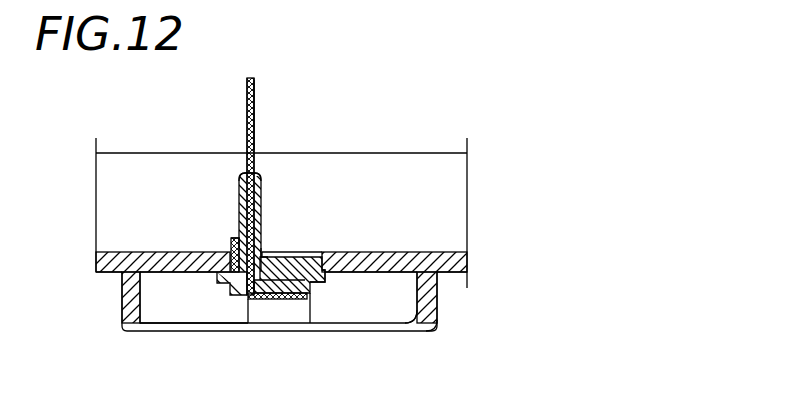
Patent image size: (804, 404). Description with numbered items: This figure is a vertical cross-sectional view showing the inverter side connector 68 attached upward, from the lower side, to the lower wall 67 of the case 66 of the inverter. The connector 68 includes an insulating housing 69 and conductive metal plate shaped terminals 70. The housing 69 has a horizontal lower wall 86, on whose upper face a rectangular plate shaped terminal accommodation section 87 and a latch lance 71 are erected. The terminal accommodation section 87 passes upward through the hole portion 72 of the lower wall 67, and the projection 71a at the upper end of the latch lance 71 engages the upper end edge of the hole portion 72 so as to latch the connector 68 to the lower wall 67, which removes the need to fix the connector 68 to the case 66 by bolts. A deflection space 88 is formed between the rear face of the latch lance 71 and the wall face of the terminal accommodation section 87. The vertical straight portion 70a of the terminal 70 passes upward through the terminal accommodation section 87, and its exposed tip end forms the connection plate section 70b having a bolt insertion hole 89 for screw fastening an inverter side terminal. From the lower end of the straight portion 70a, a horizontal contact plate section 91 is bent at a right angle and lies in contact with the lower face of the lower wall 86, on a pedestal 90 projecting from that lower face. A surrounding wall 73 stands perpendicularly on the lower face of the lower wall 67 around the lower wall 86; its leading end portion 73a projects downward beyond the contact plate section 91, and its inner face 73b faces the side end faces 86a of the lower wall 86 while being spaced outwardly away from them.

The case 66 is at (411, 151).
The lower wall 67 is at (400, 252).
The inverter side connector 68 is at (225, 303).
The insulating housing 69 is at (266, 211).
The terminal 70 is at (245, 177).
The straight portion 70a is at (265, 190).
The connection plate section 70b is at (247, 137).
The latch lance 71 is at (191, 234).
The projection 71a is at (232, 243).
The hole portion 72 is at (261, 248).
The surrounding wall 73 is at (314, 317).
The leading end portion 73a is at (431, 332).
The inner face 73b is at (409, 308).
The lower wall 86 is at (323, 314).
The side end face 86a is at (323, 278).
The terminal accommodation section 87 is at (241, 181).
The deflection space 88 is at (217, 276).
The bolt insertion hole 89 is at (254, 99).
The pedestal 90 is at (318, 288).
The horizontal contact plate section 91 is at (270, 299).